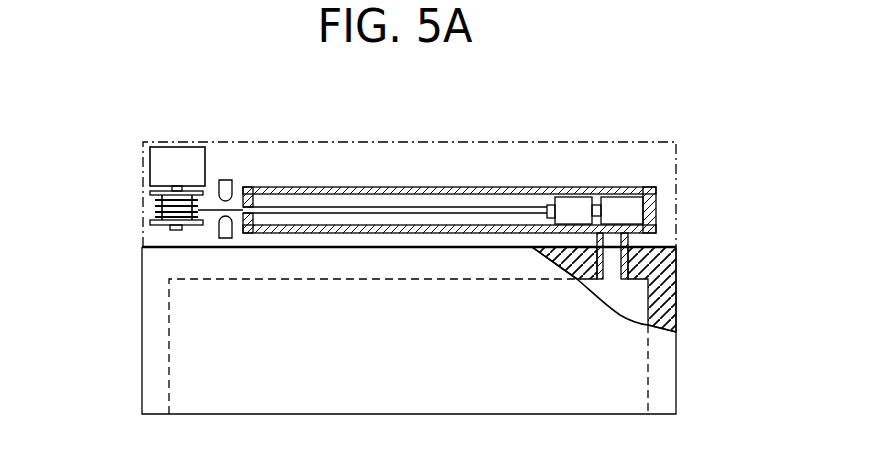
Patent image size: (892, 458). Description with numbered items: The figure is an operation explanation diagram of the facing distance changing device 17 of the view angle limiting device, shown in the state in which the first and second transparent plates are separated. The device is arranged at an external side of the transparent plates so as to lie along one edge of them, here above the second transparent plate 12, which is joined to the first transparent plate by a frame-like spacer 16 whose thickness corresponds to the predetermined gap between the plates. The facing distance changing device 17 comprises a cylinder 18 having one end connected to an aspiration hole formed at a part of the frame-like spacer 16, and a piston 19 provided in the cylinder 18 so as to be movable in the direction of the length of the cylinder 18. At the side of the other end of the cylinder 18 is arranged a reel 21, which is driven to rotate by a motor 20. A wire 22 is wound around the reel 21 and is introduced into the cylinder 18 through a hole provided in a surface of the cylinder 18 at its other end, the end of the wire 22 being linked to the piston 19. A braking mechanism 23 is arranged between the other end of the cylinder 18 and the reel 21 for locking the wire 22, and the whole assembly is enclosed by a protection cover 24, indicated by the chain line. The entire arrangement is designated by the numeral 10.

The apparatus 10 is at (128, 403).
The second transparent plate 12 is at (188, 338).
The frame-like spacer 16 is at (677, 272).
The facing distance changing device 17 is at (560, 133).
The cylinder 18 is at (491, 187).
The piston 19 is at (580, 205).
The motor 20 is at (160, 165).
The reel 21 is at (150, 227).
The wire 22 is at (337, 207).
The braking mechanism 23 is at (227, 172).
The protection cover 24 is at (424, 142).